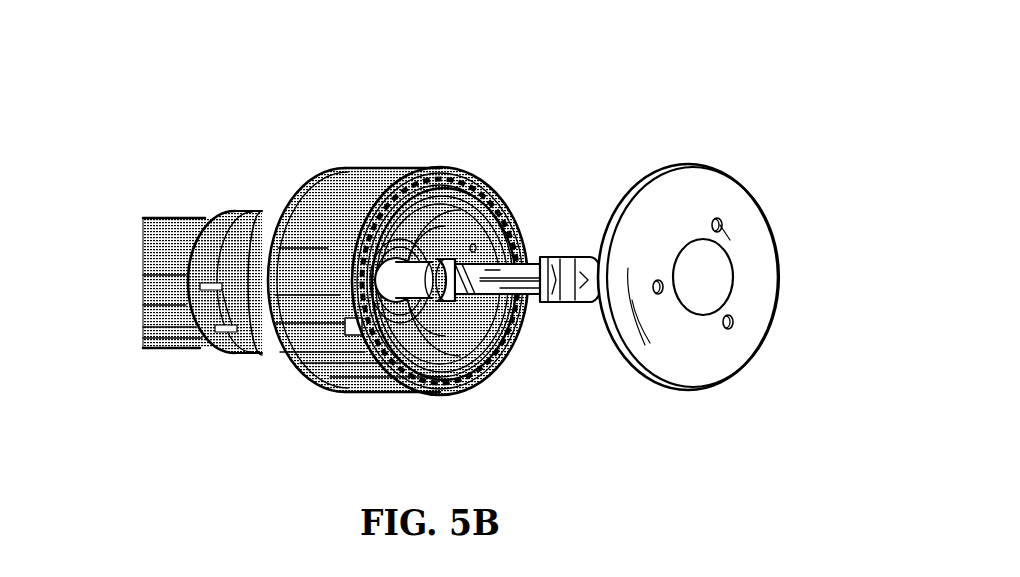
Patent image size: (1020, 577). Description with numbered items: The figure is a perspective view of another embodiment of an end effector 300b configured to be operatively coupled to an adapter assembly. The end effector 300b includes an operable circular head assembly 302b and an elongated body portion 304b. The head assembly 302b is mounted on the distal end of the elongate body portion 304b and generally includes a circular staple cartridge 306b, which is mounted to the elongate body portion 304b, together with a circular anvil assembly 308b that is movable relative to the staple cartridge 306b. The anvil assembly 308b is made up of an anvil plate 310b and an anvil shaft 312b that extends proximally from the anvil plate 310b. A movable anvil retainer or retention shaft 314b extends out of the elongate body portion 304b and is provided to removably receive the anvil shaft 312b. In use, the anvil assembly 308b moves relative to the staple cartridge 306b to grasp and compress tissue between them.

The end effector 300b is at (487, 236).
The circular head assembly 302b is at (505, 184).
The elongated body portion 304b is at (193, 227).
The circular staple cartridge 306b is at (449, 250).
The circular anvil assembly 308b is at (705, 282).
The anvil plate 310b is at (714, 253).
The anvil shaft 312b is at (552, 262).
The anvil retainer or retention shaft 314b is at (492, 374).